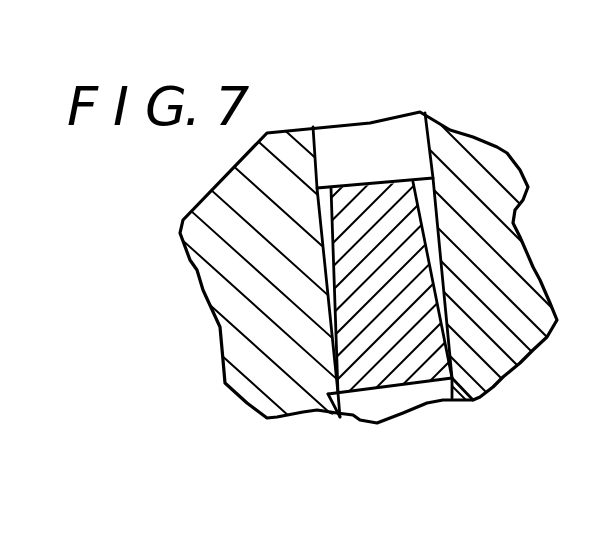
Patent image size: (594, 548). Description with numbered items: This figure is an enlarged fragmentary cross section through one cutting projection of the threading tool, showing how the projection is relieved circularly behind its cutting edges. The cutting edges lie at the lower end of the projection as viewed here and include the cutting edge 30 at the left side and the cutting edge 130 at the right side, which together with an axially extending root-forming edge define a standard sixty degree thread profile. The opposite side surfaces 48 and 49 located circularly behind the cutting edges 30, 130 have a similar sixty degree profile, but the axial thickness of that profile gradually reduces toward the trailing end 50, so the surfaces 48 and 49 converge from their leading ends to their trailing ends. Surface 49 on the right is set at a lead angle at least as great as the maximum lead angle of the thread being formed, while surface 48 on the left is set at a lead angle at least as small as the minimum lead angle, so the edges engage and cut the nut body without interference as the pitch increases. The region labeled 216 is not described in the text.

The side surface 48 is at (327, 268).
The trailing end 50 is at (367, 185).
The side surface 49 is at (443, 252).
The side section 216 is at (428, 178).
The cutting edge 130 is at (453, 376).
The cutting edge 30 is at (328, 394).